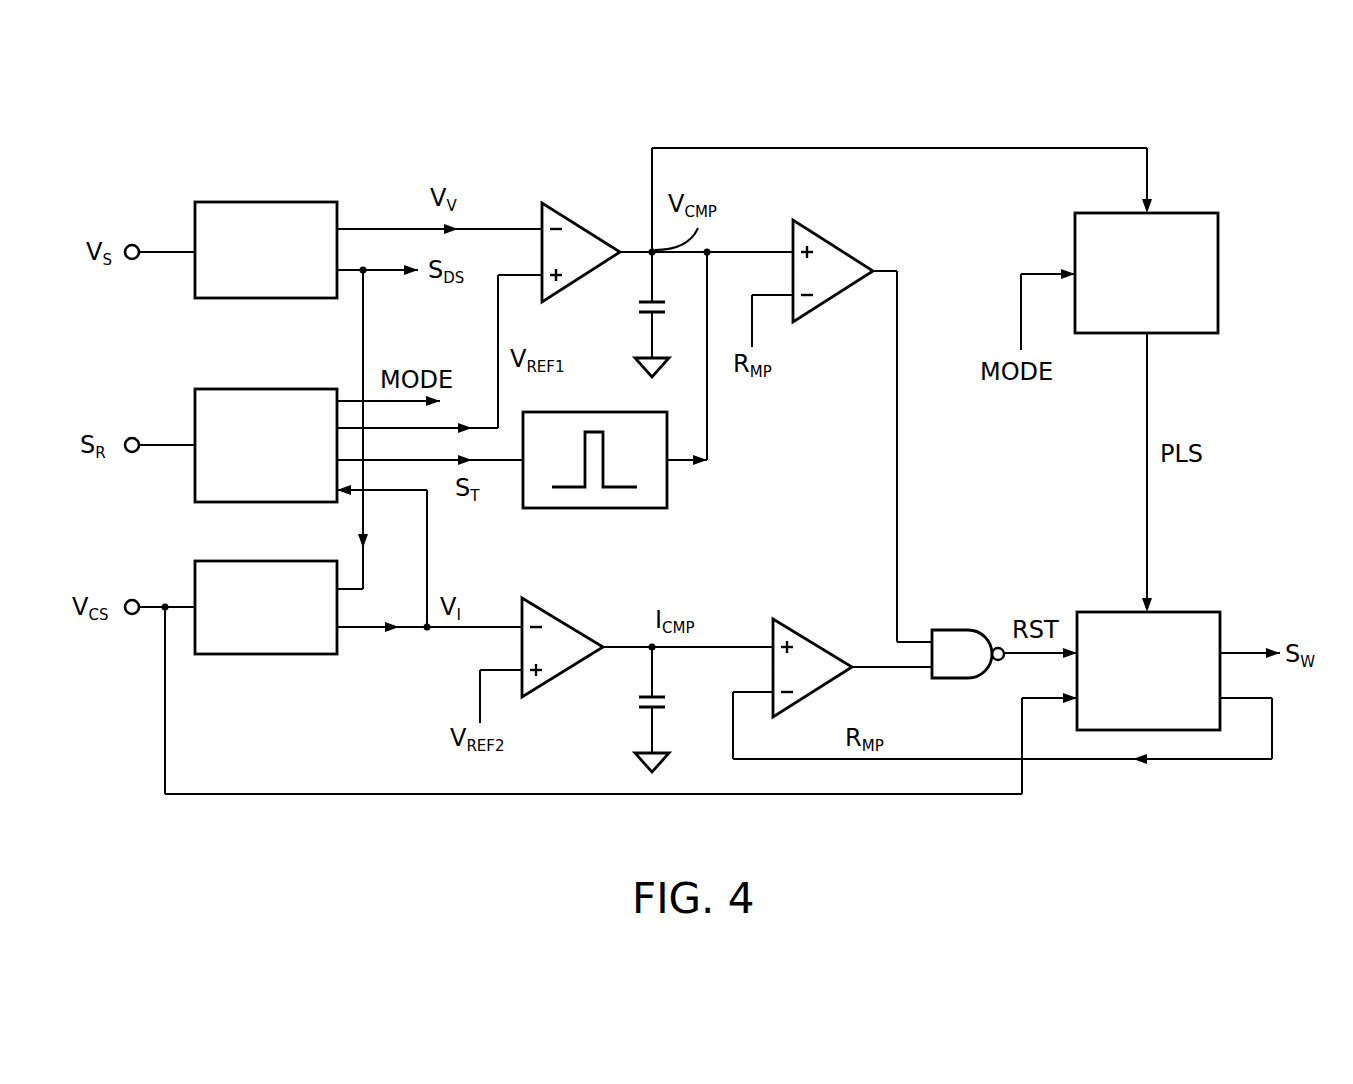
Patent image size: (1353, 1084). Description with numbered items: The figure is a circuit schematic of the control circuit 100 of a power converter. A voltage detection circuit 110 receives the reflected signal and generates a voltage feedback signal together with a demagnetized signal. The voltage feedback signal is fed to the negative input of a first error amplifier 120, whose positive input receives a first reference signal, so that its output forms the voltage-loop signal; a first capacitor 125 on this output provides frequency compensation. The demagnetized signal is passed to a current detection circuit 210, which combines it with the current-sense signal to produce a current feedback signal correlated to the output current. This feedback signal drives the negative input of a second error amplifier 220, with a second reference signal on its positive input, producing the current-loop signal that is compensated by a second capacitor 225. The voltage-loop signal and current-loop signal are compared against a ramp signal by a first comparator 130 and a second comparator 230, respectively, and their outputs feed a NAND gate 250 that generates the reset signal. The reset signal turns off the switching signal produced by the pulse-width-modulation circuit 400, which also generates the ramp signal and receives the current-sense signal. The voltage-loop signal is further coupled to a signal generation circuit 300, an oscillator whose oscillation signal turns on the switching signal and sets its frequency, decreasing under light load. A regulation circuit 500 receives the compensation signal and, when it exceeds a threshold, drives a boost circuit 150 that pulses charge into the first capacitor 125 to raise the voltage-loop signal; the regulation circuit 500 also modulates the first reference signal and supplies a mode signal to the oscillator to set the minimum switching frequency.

The control circuit 100 is at (1267, 124).
The voltage detection circuit 110 is at (266, 235).
The first error amplifier 120 is at (583, 250).
The first capacitor 125 is at (631, 314).
The first comparator 130 is at (839, 271).
The boost circuit 150 is at (595, 447).
The current detection circuit 210 is at (266, 593).
The second error amplifier 220 is at (566, 647).
The second capacitor 225 is at (627, 709).
The second comparator 230 is at (816, 665).
The NAND gate 250 is at (968, 639).
The signal generation circuit 300 is at (1146, 260).
The PWM circuit 400 is at (1148, 657).
The regulation circuit 500 is at (266, 431).